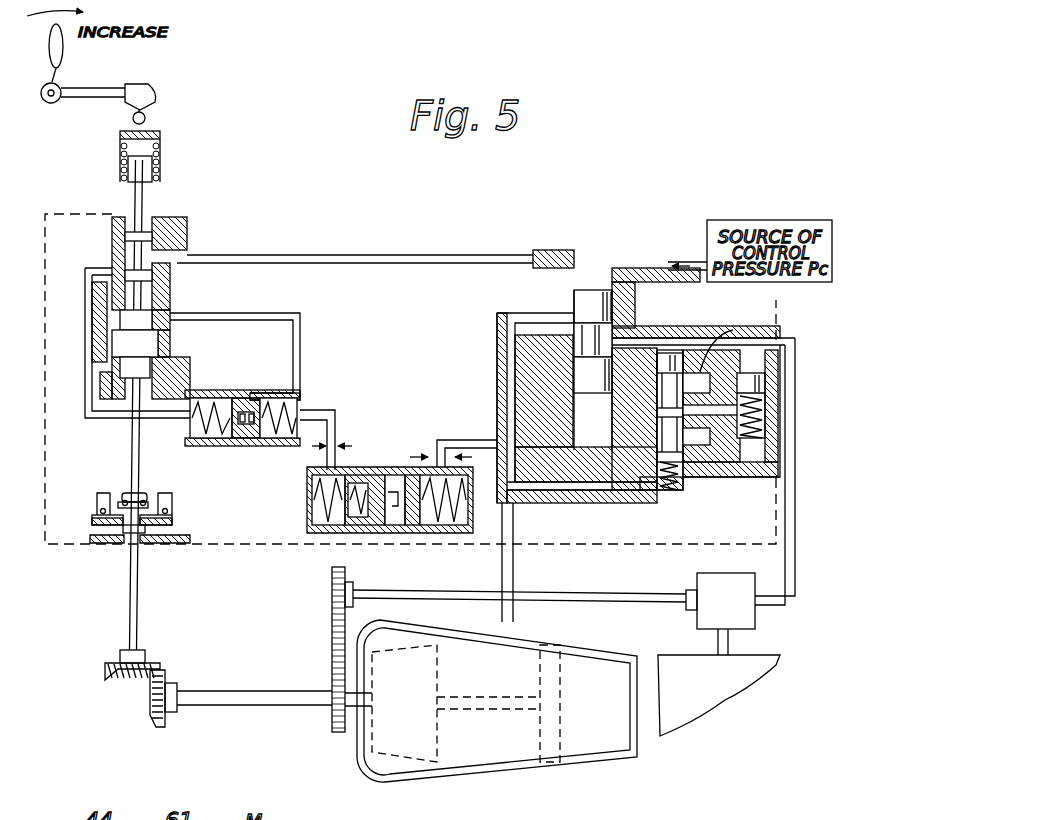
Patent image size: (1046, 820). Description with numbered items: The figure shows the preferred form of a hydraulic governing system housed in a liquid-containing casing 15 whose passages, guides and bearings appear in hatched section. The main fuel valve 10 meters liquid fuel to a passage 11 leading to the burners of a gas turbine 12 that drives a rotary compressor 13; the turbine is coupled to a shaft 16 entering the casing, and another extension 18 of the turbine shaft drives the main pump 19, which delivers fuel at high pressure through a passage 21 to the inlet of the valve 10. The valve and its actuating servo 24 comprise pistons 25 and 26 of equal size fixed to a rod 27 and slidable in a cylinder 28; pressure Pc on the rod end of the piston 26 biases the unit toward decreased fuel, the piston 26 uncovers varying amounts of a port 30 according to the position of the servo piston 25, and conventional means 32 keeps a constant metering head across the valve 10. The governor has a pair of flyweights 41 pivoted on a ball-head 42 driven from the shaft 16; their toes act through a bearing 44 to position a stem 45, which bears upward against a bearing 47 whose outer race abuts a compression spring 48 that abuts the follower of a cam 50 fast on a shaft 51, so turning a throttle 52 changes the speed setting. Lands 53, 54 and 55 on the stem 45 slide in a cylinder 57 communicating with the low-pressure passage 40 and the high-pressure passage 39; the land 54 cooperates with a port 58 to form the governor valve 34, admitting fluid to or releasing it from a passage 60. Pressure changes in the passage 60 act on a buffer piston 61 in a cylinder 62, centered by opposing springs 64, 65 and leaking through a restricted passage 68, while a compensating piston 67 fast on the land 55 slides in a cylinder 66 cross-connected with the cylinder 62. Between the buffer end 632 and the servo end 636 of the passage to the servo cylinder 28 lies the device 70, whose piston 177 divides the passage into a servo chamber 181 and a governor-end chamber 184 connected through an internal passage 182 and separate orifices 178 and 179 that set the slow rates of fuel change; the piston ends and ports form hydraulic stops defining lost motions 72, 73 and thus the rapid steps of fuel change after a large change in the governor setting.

The main fuel valve 10 is at (515, 303).
The passage 11 is at (510, 340).
The gas turbine 12 is at (500, 770).
The rotary compressor 13 is at (397, 755).
The casing 15 is at (110, 548).
The shaft 16 is at (140, 627).
The turbine shaft extension 18 is at (602, 592).
The main pump 19 is at (713, 573).
The passage 21 is at (790, 554).
The actuating servo 24 is at (595, 278).
The servo piston 25 is at (590, 380).
The piston 26 is at (603, 318).
The rod 27 is at (598, 346).
The cylinder 28 is at (580, 415).
The port 30 is at (574, 316).
The pressure drop maintaining means 32 is at (705, 485).
The governor valve 34 is at (192, 246).
The high pressure passage 39 is at (238, 262).
The low pressure passage 40 is at (160, 290).
The flyweights 41 is at (97, 506).
The ball-head 42 is at (162, 534).
The bearing 44 is at (124, 496).
The stem 45 is at (145, 202).
The bearing 47 is at (120, 180).
The speeder spring 48 is at (159, 146).
The cam 50 is at (150, 86).
The shaft 51 is at (63, 102).
The throttle 52 is at (63, 58).
The land 53 is at (125, 237).
The land 54 is at (125, 276).
The land 55 is at (125, 318).
The cylinder 57 is at (158, 218).
The port 58 is at (125, 282).
The passage 60 is at (92, 424).
The buffer piston 61 is at (246, 400).
The buffer cylinder 62 is at (212, 405).
The compression spring 64 is at (190, 432).
The compression spring 65 is at (286, 406).
The cylinder 66 is at (165, 347).
The compensating piston 67 is at (116, 345).
The restricted passage 68 is at (246, 442).
The device 70 is at (432, 420).
The lost motion 72 is at (345, 448).
The lost motion 73 is at (446, 452).
The piston 177 is at (350, 545).
The orifice 178 is at (395, 490).
The orifice 179 is at (382, 532).
The servo end chamber 181 is at (455, 522).
The passage 182 is at (396, 530).
The governor end chamber 184 is at (315, 505).
The buffer end of passage 632 is at (318, 412).
The servo end of passage 636 is at (492, 440).